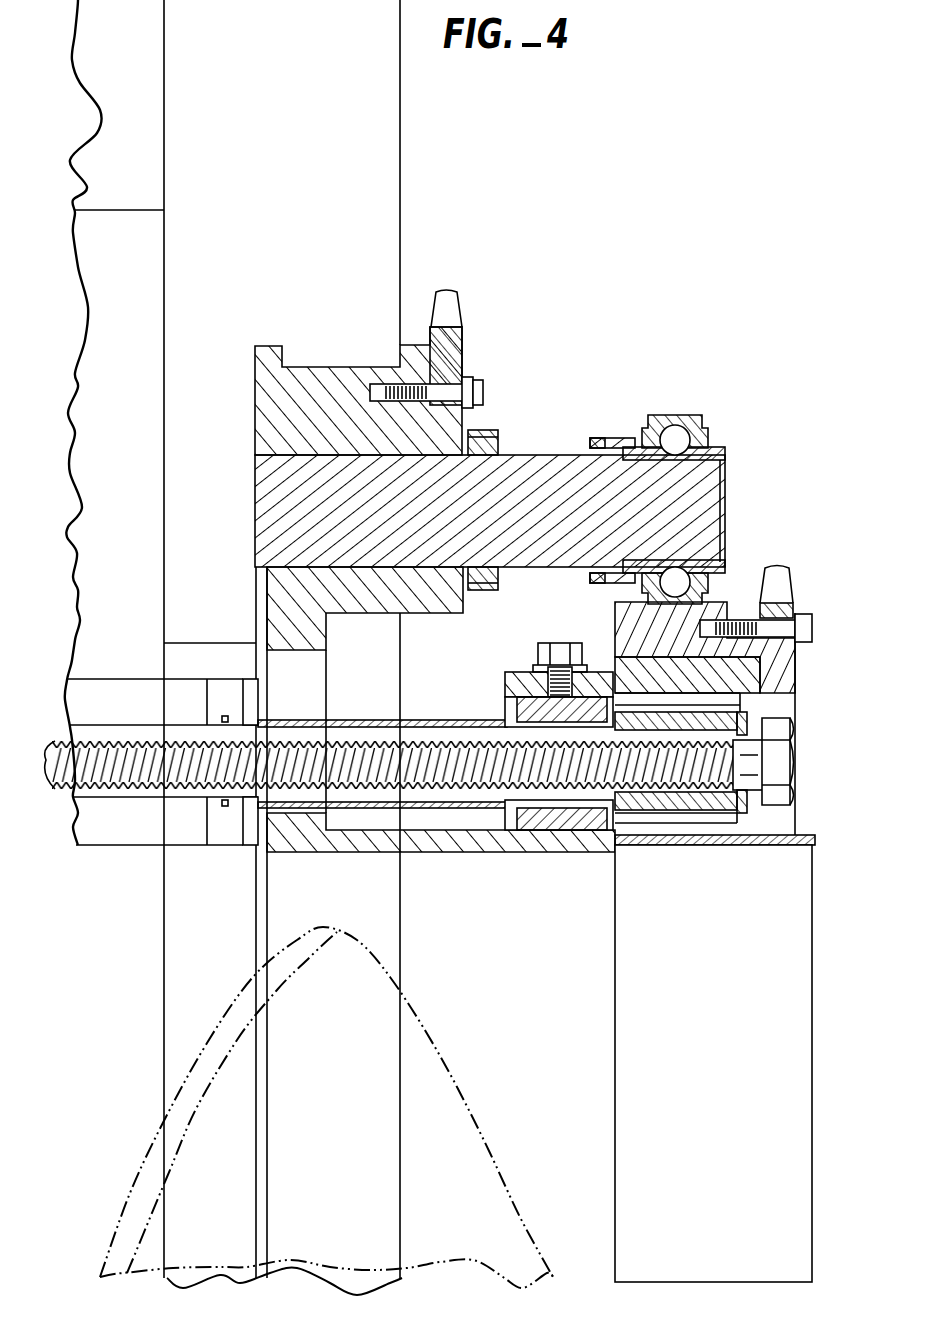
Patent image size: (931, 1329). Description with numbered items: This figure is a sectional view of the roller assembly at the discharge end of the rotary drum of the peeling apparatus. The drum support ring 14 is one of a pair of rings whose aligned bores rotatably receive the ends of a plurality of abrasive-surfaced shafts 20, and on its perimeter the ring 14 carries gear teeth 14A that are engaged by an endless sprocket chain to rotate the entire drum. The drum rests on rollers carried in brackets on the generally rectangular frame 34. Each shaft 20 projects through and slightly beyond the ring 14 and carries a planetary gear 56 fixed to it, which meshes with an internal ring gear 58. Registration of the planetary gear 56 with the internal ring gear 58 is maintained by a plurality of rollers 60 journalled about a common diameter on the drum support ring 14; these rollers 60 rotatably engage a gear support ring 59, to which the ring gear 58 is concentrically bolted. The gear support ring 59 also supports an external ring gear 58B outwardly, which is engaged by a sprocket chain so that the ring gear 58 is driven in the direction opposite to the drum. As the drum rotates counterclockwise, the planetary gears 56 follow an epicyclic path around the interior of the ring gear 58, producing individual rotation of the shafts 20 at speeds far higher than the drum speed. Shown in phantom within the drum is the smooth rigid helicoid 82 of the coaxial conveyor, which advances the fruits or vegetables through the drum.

The ring 14 is at (263, 397).
The gear teeth 14A is at (445, 297).
The shaft 20 is at (108, 695).
The frame 34 is at (350, 106).
The planetary gear 56 is at (733, 827).
The internal ring gear 58 is at (753, 706).
The external ring gear 58B is at (776, 575).
The gear support ring 59 is at (787, 668).
The roller 60 is at (678, 418).
The helicoid 82 is at (440, 1090).